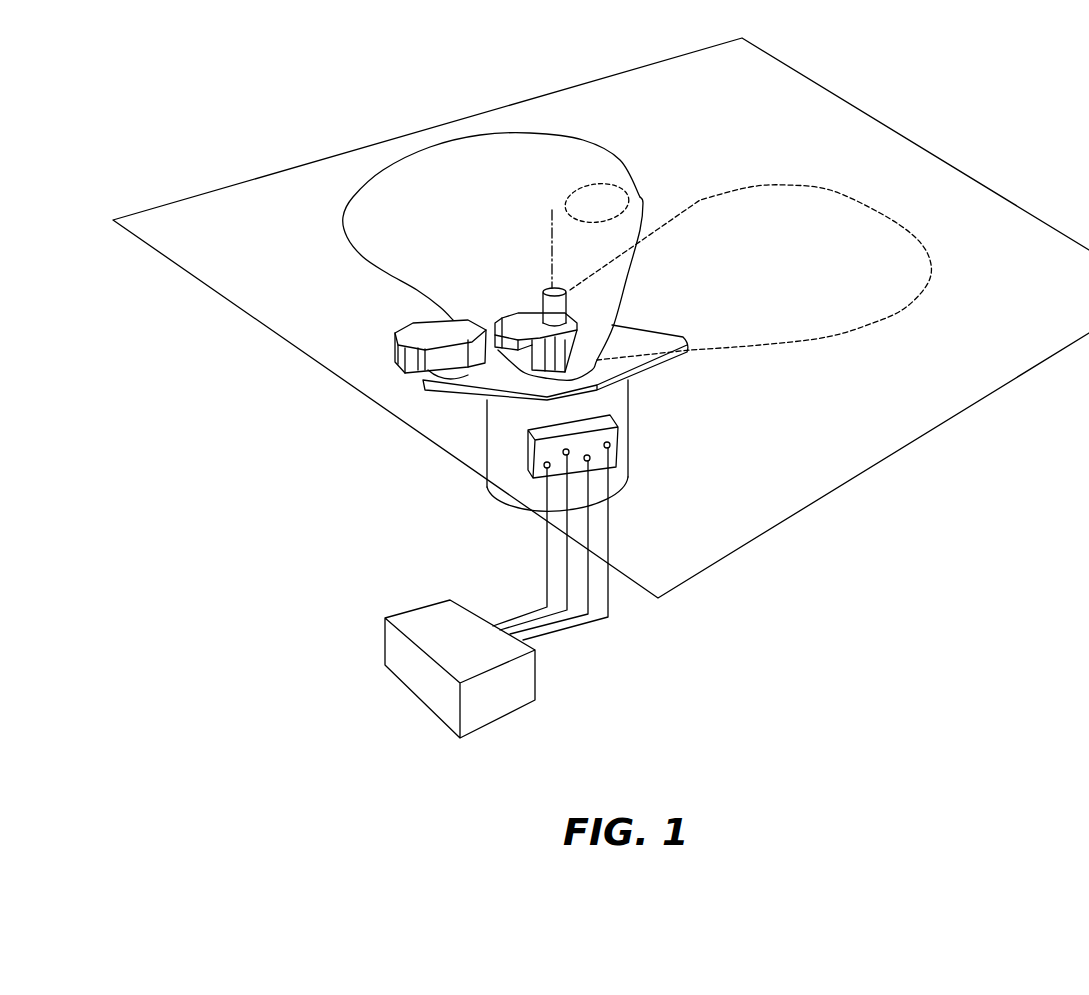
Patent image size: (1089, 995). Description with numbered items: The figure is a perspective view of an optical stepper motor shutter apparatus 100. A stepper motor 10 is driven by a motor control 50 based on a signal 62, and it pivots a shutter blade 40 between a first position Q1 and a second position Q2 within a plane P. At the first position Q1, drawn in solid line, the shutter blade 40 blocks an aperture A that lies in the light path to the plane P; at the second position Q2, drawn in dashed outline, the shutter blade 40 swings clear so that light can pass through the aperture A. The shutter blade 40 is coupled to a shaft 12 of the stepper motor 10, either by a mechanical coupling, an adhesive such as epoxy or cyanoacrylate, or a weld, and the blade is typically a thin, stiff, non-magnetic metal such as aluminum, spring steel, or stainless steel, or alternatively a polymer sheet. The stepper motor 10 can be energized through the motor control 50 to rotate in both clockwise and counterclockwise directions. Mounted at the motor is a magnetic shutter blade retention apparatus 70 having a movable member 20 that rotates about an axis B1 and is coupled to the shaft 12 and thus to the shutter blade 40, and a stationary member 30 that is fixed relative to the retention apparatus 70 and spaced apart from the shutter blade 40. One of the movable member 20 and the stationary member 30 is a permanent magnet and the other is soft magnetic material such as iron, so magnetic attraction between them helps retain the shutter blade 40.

The optical stepper motor shutter apparatus 100 is at (822, 700).
The stepper motor 10 is at (640, 400).
The shaft 12 is at (543, 291).
The movable member 20 is at (527, 311).
The stationary member 30 is at (393, 345).
The shutter blade 40 is at (600, 150).
The motor control 50 is at (471, 645).
The signal 62 is at (412, 665).
The magnetic shutter blade retention apparatus 70 is at (365, 296).
The first position Q1 is at (474, 147).
The second position Q2 is at (877, 215).
The aperture A is at (608, 186).
The axis B1 is at (552, 222).
The plane P is at (684, 549).